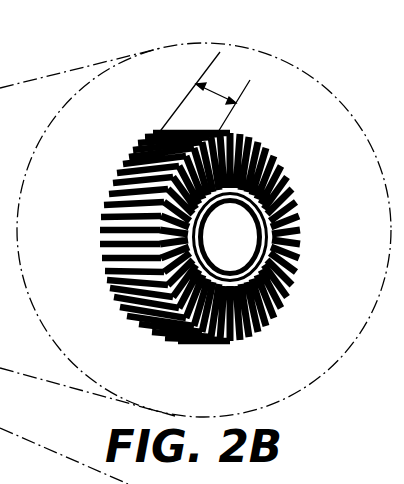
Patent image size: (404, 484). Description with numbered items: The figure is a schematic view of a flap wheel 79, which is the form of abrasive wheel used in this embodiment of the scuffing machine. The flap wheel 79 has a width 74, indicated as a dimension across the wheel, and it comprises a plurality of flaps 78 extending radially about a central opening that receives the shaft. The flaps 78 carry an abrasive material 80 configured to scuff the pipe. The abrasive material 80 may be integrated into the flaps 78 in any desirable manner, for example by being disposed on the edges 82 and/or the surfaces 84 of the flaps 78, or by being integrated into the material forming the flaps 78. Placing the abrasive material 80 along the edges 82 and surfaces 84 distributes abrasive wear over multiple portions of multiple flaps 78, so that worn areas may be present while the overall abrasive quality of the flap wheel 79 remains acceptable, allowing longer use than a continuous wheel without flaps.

The width 74 is at (218, 93).
The flaps 78 is at (128, 172).
The flap wheel 79 is at (158, 105).
The abrasive material 80 is at (128, 154).
The edges 82 is at (117, 317).
The surfaces 84 is at (114, 279).